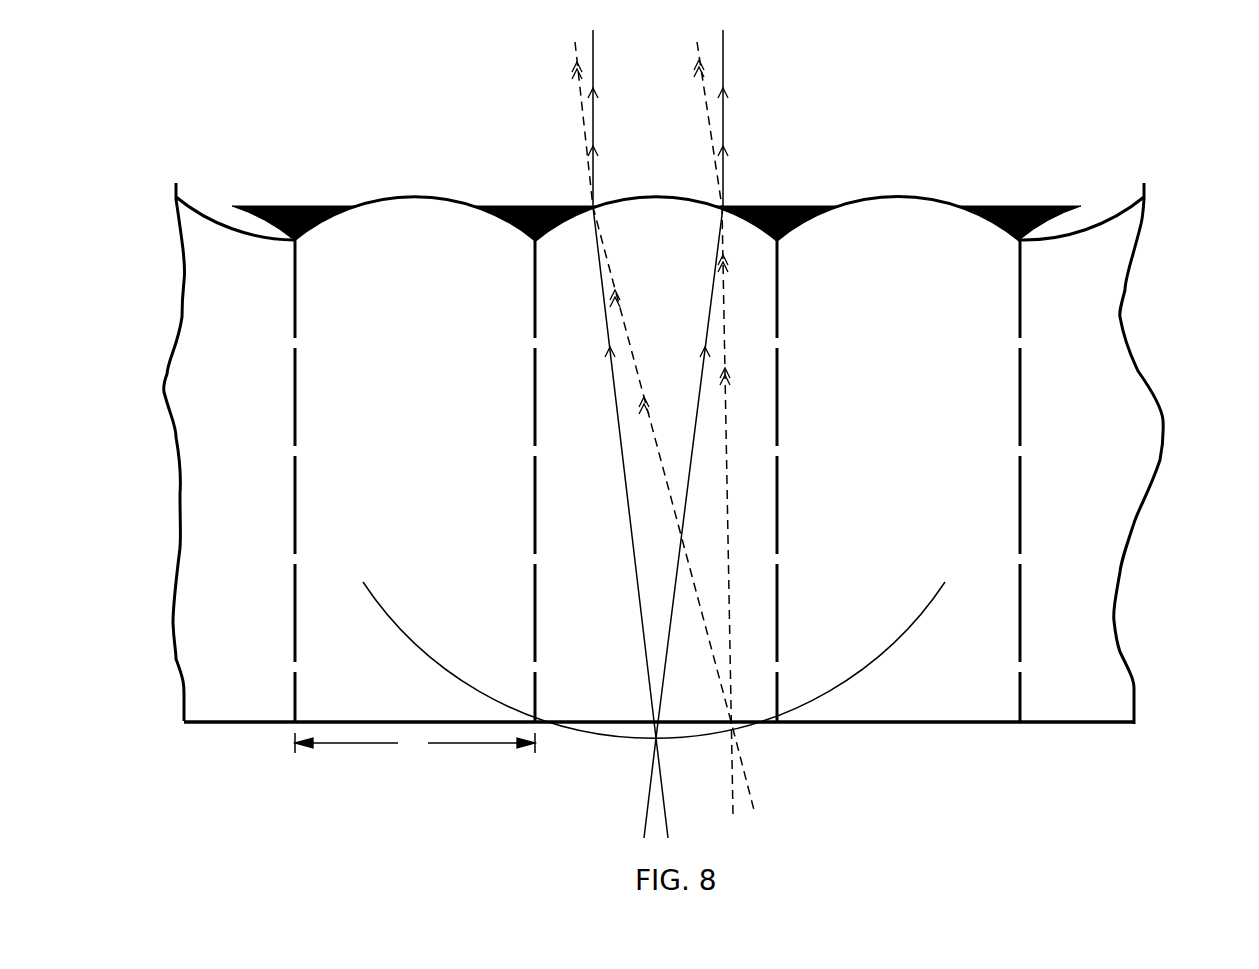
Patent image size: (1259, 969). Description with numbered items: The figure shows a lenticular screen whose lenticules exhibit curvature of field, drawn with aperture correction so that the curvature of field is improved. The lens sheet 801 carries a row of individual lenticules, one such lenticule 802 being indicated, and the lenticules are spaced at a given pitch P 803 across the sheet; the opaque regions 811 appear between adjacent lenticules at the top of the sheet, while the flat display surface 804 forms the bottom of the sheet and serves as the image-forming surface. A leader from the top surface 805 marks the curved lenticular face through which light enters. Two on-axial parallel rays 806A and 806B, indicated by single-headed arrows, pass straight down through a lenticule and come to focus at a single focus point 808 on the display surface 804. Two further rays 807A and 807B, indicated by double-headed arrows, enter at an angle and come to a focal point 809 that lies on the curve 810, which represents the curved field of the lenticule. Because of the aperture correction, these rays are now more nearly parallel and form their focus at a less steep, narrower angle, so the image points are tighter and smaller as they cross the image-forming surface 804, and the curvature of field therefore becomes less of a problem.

The lens sheet 801 is at (1143, 545).
The lenticule 802 is at (847, 686).
The pitch P 803 is at (412, 762).
The display surface 804 is at (223, 737).
The lens array top surface 805 is at (873, 191).
The parallel ray 806A is at (599, 54).
The parallel ray 806B is at (732, 79).
The ray 807A is at (579, 115).
The ray 807B is at (701, 110).
The focus point 808 is at (649, 743).
The focal point 809 is at (741, 735).
The curve 810 is at (900, 692).
The opaque region between lenslets 811 is at (1015, 193).